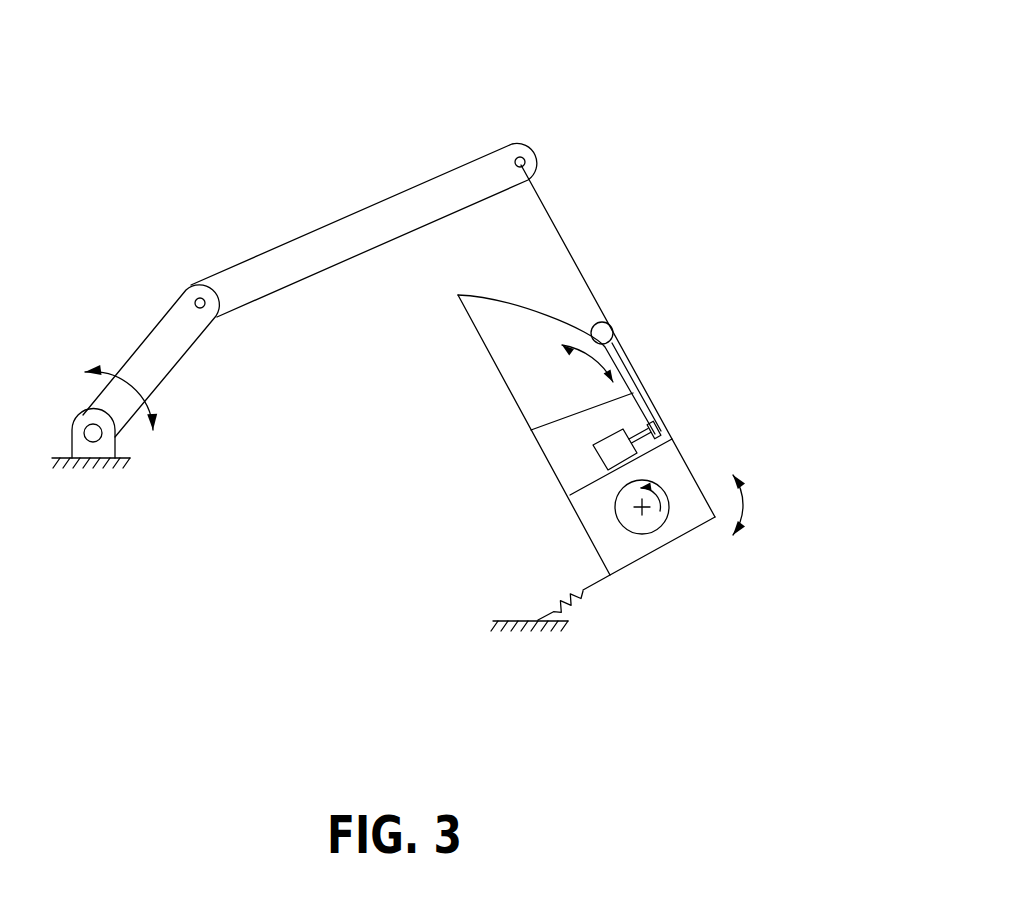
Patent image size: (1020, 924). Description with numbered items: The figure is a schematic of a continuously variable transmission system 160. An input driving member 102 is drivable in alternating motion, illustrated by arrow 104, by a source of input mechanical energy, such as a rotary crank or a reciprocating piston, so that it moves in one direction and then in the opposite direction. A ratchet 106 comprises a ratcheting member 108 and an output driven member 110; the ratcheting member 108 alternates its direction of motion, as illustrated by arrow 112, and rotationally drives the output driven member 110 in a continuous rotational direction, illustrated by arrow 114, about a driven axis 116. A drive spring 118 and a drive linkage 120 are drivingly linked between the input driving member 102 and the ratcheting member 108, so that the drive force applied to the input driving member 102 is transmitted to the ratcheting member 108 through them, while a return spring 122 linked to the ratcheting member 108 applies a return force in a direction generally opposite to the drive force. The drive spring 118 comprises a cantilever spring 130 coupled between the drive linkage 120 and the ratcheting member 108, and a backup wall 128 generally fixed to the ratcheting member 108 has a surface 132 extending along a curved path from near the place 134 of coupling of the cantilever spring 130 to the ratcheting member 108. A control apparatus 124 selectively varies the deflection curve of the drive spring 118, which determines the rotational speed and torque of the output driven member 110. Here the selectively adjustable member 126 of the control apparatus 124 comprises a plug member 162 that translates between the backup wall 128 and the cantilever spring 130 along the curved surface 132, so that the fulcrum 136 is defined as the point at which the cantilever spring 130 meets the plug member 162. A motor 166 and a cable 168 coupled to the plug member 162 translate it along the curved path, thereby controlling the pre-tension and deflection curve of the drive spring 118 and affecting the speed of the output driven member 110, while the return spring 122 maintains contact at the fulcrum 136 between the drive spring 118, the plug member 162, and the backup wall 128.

The input driving member 102 is at (156, 327).
The arrow illustrating alternating motion 104 is at (150, 408).
The ratchet 106 is at (679, 571).
The ratcheting member 108 is at (576, 512).
The output driven member 110 is at (642, 534).
The arrow illustrating alternating directions of motion 112 is at (743, 509).
The arrow illustrating continuous rotational direction 114 is at (658, 491).
The driven axis 116 is at (636, 511).
The drive spring 118 is at (611, 277).
The drive linkage 120 is at (352, 213).
The return spring 122 is at (582, 597).
The control apparatus 124 is at (487, 396).
The selectively adjustable member 126 is at (440, 344).
The backup wall 128 is at (565, 298).
The cantilever spring 130 is at (557, 228).
The surface of the backup wall 132 is at (534, 286).
The place of coupling 134 is at (683, 415).
The fulcrum 136 is at (635, 333).
The continuously variable transmission system 160 is at (578, 55).
The plug member 162 is at (609, 325).
The motor 166 is at (593, 445).
The cable 168 is at (633, 393).